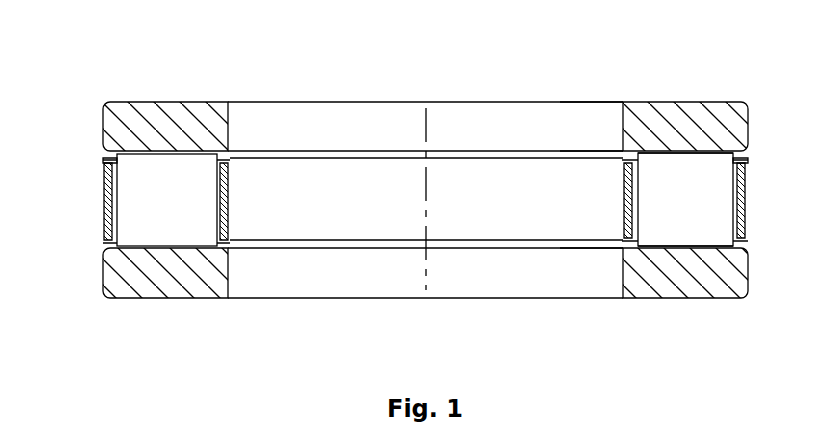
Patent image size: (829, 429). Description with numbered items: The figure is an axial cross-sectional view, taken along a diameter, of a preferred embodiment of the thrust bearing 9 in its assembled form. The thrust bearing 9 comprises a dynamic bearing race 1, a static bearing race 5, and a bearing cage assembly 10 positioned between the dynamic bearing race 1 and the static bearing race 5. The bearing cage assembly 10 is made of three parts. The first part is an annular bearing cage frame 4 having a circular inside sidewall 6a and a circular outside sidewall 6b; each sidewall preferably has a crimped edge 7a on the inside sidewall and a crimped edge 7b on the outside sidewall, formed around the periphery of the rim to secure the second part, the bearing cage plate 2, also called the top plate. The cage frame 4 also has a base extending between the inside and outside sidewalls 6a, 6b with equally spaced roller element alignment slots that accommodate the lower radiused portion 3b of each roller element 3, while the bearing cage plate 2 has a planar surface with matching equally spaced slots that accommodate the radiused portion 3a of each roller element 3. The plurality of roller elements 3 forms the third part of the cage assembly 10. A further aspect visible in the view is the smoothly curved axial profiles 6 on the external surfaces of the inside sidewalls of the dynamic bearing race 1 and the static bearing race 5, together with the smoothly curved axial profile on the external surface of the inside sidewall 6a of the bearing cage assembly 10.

The dynamic bearing race 1 is at (713, 118).
The bearing cage plate 2 is at (752, 151).
The roller element 3 is at (682, 199).
The radiused portion of roller element 3a is at (675, 152).
The lower radiused portion of roller element 3b is at (672, 247).
The annular bearing cage frame 4 is at (757, 190).
The static bearing race 5 is at (722, 266).
The smoothly curved axial profiles 6 is at (627, 260).
The inside sidewall 6a is at (625, 210).
The outside sidewall 6b is at (102, 207).
The crimped edge of inside sidewall 7a is at (222, 158).
The crimped edge of outside sidewall 7b is at (102, 158).
The thrust bearing 9 is at (613, 85).
The bearing cage assembly 10 is at (416, 200).